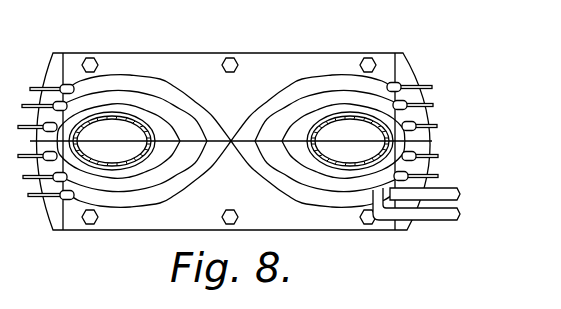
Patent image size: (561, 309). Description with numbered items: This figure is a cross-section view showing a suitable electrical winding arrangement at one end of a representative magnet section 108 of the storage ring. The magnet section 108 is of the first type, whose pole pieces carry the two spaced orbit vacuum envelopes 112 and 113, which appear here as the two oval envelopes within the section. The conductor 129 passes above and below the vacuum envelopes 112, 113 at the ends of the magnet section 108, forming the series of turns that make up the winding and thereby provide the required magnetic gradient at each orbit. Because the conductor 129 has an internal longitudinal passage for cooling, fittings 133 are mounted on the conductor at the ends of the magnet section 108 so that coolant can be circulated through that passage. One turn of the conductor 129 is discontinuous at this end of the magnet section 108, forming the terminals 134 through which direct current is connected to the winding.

The magnet section 108 is at (392, 31).
The conductor 129 is at (172, 108).
The orbit vacuum envelope 112 is at (134, 127).
The orbit vacuum envelope 113 is at (372, 125).
The fittings 133 is at (418, 118).
The terminals 134 is at (461, 195).